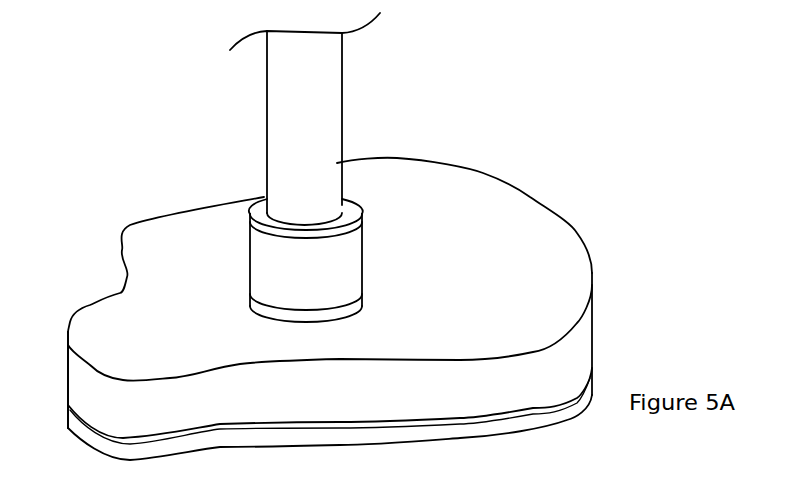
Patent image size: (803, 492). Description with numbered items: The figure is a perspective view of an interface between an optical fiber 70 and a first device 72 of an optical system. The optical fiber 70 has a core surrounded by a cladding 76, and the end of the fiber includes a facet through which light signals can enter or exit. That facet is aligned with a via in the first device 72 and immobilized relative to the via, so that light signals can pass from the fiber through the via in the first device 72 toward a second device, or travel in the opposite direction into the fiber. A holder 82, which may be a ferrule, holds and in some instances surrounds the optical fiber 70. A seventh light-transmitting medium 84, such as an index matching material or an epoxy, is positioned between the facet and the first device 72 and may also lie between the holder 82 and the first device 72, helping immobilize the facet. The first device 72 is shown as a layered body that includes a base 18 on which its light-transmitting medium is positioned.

The optical fiber 70 is at (206, 89).
The cladding 76 is at (327, 117).
The holder 82 is at (263, 197).
The seventh light-transmitting medium 84 is at (250, 294).
The first device 72 is at (603, 290).
The base 18 is at (64, 333).